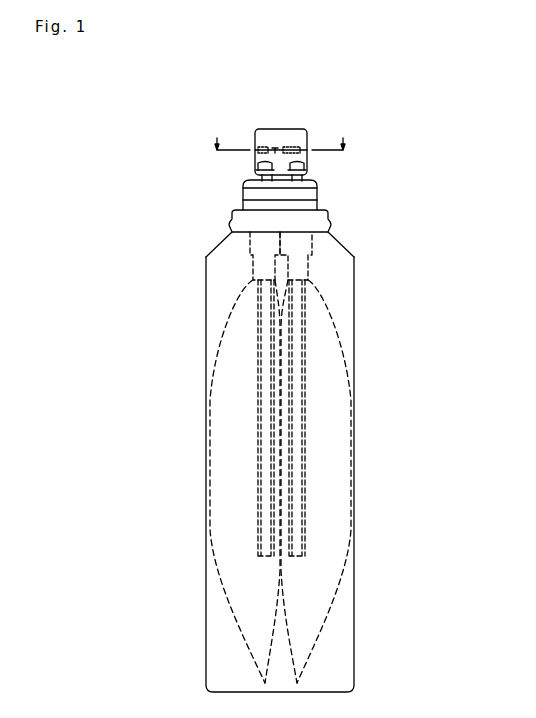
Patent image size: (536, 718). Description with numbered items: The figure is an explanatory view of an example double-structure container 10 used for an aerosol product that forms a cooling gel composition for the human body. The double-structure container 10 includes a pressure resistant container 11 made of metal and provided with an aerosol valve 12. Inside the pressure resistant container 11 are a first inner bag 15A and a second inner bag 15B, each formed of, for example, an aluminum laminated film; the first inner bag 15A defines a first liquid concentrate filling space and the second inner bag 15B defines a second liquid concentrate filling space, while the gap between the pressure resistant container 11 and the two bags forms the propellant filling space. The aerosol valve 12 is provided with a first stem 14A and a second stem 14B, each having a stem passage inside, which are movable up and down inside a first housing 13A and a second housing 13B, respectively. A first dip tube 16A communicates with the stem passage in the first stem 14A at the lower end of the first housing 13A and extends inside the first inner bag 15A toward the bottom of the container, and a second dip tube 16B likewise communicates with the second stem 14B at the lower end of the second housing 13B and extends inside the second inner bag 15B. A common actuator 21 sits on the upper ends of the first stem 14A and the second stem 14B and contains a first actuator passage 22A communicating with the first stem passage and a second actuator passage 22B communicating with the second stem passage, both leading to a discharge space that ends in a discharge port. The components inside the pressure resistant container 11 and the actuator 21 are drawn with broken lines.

The double-structure container 10 is at (176, 111).
The pressure resistant container 11 is at (355, 287).
The aerosol valve 12 is at (321, 197).
The first housing 13A is at (298, 239).
The second housing 13B is at (258, 242).
The first stem 14A is at (306, 165).
The second stem 14B is at (255, 165).
The first inner bag 15A is at (340, 325).
The second inner bag 15B is at (227, 315).
The first dip tube 16A is at (305, 422).
The second dip tube 16B is at (257, 407).
The common actuator 21 is at (276, 129).
The first actuator passage 22A is at (297, 147).
The second actuator passage 22B is at (258, 130).